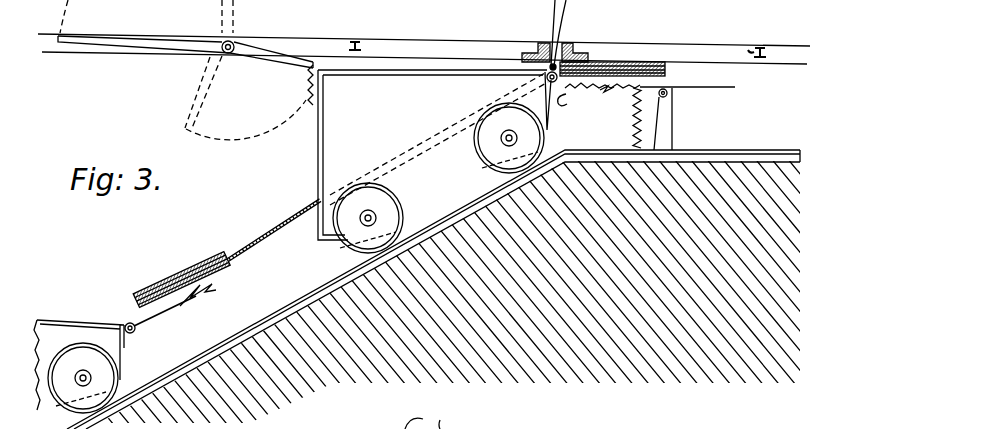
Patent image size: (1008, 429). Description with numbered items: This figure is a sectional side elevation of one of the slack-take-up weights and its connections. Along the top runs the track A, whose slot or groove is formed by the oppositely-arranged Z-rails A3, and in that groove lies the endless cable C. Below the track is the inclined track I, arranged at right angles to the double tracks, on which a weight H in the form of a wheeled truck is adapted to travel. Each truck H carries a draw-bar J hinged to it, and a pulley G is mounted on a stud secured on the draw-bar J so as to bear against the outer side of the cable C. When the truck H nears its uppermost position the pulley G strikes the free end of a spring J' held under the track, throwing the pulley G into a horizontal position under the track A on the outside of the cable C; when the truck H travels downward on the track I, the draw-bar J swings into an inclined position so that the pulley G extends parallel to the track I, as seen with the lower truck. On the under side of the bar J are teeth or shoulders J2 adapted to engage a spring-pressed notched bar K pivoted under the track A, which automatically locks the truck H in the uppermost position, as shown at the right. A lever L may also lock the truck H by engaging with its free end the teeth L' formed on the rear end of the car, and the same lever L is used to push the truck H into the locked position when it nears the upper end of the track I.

The track A is at (424, 37).
The Z-rails A3 is at (545, 42).
The endless cable C is at (566, 54).
The spring J' is at (579, 33).
The pulley G is at (652, 65).
The lever L is at (185, 70).
The teeth L' is at (291, 87).
The weight H is at (72, 321).
The spring-pressed notched bar K is at (582, 88).
The teeth or shoulders J2 is at (200, 294).
The draw-bar J is at (344, 221).
The inclined track I is at (504, 289).